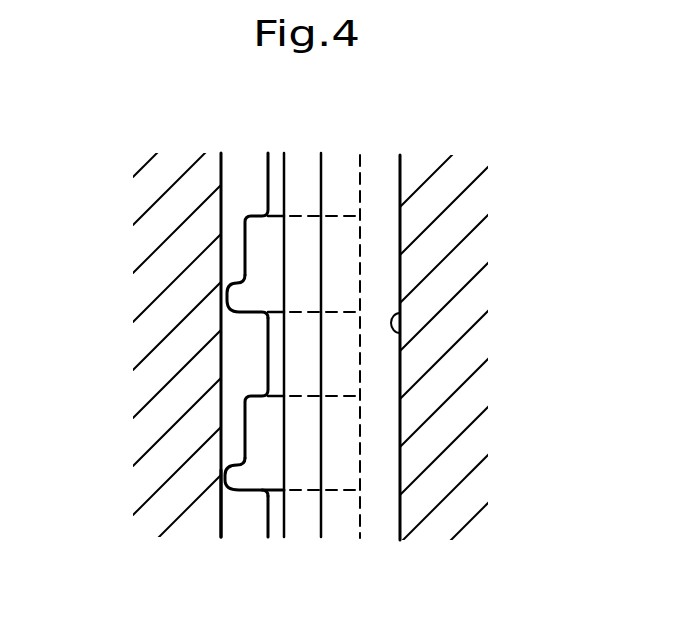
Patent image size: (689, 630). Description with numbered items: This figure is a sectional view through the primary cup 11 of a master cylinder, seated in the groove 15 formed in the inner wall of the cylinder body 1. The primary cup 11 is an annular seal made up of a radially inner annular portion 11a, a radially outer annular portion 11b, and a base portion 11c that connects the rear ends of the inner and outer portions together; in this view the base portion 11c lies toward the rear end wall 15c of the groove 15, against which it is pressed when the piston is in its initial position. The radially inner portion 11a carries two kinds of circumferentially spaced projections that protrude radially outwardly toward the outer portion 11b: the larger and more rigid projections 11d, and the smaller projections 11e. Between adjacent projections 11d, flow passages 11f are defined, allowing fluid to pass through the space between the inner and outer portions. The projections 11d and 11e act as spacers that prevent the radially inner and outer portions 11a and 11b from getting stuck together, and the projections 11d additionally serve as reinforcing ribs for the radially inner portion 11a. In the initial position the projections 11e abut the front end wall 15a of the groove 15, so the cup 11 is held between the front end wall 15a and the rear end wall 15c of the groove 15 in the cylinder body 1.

The cylinder body 1 is at (437, 200).
The primary cup 11 is at (342, 193).
The radially inner annular portion 11a is at (272, 528).
The radially outer annular portion 11b is at (338, 520).
The base portion 11c is at (375, 493).
The projections 11d is at (257, 255).
The projections 11e is at (230, 297).
The flow passages 11f is at (258, 353).
The groove 15 is at (243, 193).
The front end wall 15a is at (222, 507).
The rear end wall 15c is at (401, 335).